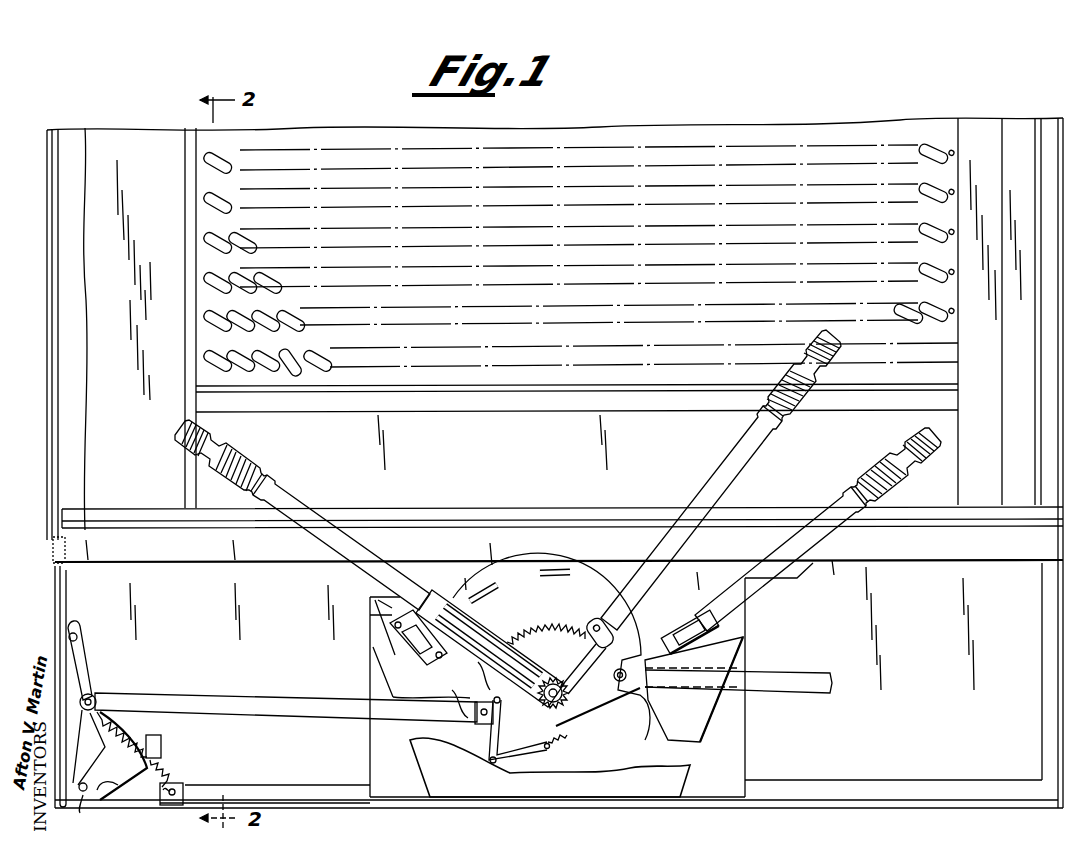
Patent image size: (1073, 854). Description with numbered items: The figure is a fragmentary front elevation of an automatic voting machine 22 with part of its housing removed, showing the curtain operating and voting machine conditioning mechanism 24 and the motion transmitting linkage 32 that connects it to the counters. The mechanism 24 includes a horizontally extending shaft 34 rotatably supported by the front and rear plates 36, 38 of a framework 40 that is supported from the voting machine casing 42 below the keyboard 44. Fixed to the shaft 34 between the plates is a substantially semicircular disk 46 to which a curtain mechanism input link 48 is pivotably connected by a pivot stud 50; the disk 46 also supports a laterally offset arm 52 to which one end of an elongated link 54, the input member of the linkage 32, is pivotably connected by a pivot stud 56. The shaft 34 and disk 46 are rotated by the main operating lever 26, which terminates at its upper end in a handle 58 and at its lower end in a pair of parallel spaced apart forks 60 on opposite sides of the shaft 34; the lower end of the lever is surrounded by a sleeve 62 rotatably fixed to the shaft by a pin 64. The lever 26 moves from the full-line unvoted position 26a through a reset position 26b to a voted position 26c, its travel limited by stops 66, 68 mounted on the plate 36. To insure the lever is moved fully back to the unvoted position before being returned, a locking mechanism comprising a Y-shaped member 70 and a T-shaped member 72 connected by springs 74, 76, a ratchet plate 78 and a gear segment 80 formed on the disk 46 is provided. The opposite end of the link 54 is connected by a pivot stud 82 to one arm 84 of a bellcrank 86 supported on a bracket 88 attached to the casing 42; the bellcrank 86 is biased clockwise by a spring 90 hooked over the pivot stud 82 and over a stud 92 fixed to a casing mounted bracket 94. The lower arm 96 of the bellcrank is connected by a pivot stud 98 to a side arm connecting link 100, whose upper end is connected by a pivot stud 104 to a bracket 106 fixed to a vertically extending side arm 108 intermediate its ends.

The voting machine 22 is at (45, 345).
The curtain operating and voting machine conditioning mechanism 24 is at (474, 598).
The main operating lever 26 is at (280, 475).
The unvoted position 26a is at (218, 478).
The reset position 26b is at (738, 456).
The voted position 26c is at (852, 490).
The motion transmitting linkage 32 is at (138, 684).
The shaft 34 is at (553, 680).
The front plate 36 is at (422, 748).
The rear plate 38 is at (372, 668).
The framework 40 is at (366, 631).
The voting machine casing 42 is at (1040, 578).
The keyboard 44 is at (648, 124).
The semicircular disk 46 is at (554, 628).
The curtain mechanism input link 48 is at (803, 672).
The pivot stud 50 is at (694, 689).
The laterally offset arm 52 is at (482, 726).
The elongated link 54 is at (272, 703).
The pivot stud 56 is at (470, 702).
The handle 58 is at (224, 433).
The forks 60 is at (590, 712).
The sleeve 62 is at (434, 602).
The pin 64 is at (540, 710).
The stop 66 is at (386, 624).
The stop 68 is at (722, 640).
The Y-shaped member 70 is at (497, 764).
The T-shaped member 72 is at (618, 681).
The spring 74 is at (482, 670).
The spring 76 is at (562, 738).
The ratchet plate 78 is at (602, 626).
The gear segment 80 is at (516, 638).
The pivot stud 82 is at (92, 695).
The arm 84 is at (138, 729).
The bellcrank 86 is at (100, 752).
The bracket 88 is at (162, 745).
The spring 90 is at (166, 775).
The stud 92 is at (188, 792).
The bracket 94 is at (162, 800).
The lower arm 96 is at (100, 792).
The pivot stud 98 is at (74, 808).
The side arm connecting link 100 is at (70, 666).
The pivot stud 104 is at (75, 632).
The bracket 106 is at (80, 633).
The side arm 108 is at (62, 570).